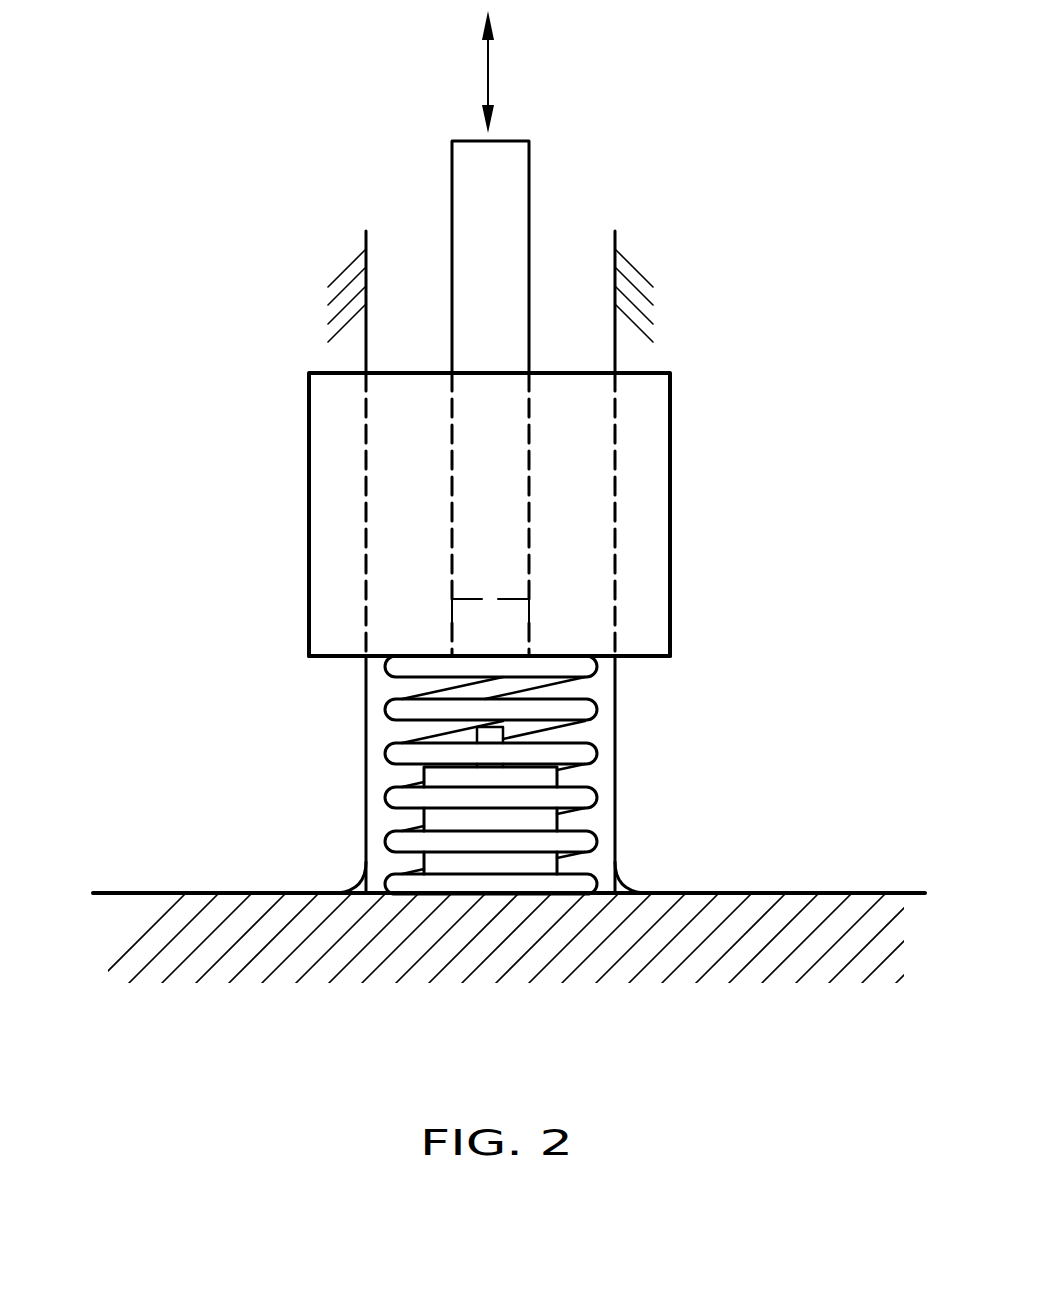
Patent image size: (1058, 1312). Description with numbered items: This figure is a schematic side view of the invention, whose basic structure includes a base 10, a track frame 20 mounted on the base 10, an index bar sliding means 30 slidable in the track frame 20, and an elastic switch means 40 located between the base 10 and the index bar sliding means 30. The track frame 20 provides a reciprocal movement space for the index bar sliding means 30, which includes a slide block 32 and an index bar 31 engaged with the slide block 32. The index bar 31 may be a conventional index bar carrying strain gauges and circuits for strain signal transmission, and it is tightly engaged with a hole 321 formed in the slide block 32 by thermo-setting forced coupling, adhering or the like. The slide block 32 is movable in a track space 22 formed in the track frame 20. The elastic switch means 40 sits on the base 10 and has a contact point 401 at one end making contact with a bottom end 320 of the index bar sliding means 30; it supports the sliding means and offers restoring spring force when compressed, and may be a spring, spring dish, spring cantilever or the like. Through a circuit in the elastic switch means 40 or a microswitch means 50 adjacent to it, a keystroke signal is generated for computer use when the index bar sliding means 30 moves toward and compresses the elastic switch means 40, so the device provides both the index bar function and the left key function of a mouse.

The base 10 is at (147, 907).
The track frame 20 is at (366, 793).
The track space 22 is at (545, 562).
The index bar sliding means 30 is at (480, 363).
The index bar 31 is at (507, 213).
The slide block 32 is at (548, 543).
The bottom end 320 is at (642, 658).
The hole 321 is at (517, 620).
The elastic switch means 40 is at (391, 775).
The contact point 401 is at (388, 664).
The microswitch means 50 is at (453, 817).